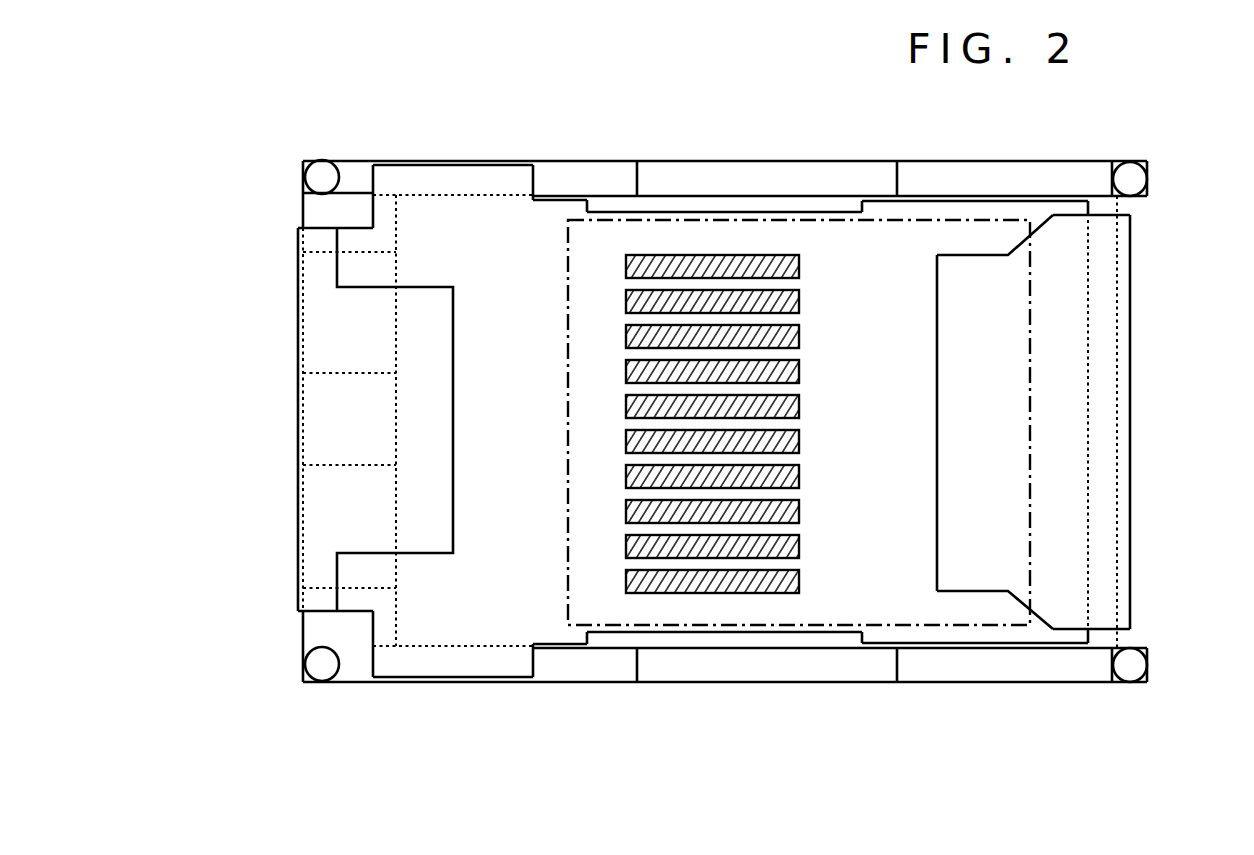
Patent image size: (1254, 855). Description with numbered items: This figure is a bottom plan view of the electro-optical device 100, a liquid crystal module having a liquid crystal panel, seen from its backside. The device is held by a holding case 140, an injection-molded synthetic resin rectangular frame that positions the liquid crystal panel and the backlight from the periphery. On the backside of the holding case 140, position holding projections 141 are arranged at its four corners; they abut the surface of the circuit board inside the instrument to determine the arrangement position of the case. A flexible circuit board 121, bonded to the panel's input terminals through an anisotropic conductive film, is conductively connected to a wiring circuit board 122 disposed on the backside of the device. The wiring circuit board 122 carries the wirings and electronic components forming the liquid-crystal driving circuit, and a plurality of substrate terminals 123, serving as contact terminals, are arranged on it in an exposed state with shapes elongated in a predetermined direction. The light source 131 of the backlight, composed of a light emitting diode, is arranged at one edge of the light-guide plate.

The electro-optical device 100 is at (795, 92).
The flexible circuit board 121 is at (1130, 462).
The wiring circuit board 122 is at (828, 603).
The substrate terminals 123 is at (745, 585).
The light source 131 is at (380, 328).
The holding case 140 is at (1012, 177).
The position holding projection 141 is at (310, 178).